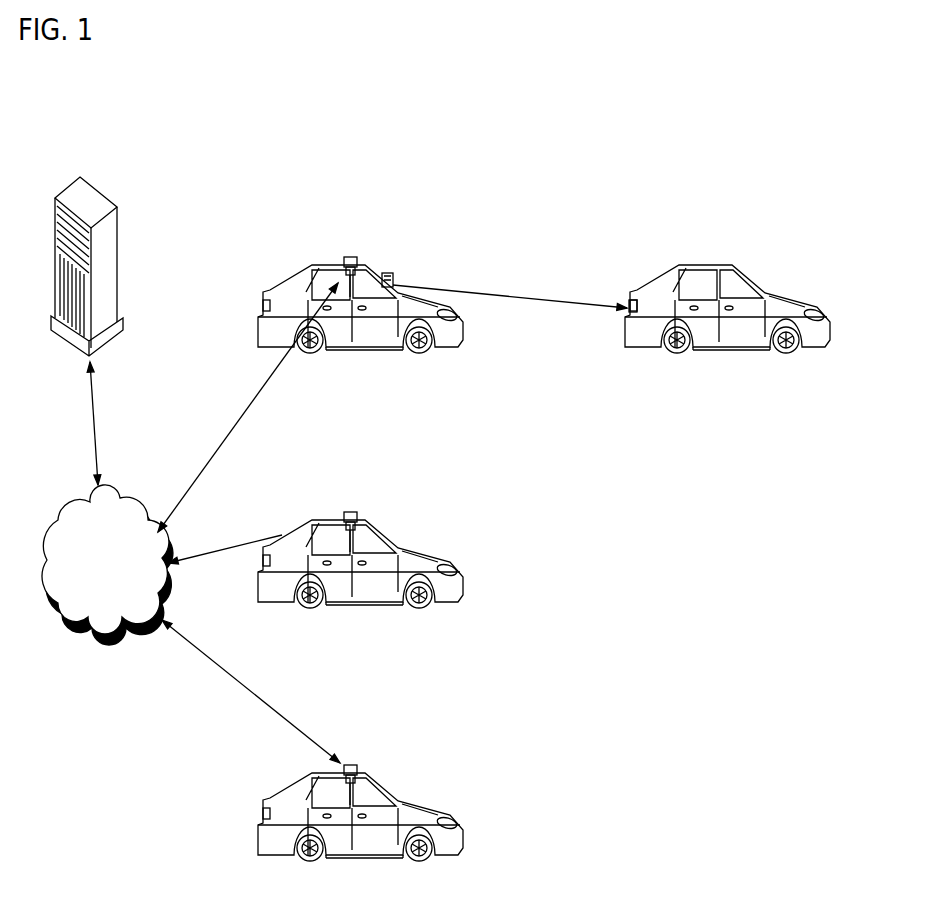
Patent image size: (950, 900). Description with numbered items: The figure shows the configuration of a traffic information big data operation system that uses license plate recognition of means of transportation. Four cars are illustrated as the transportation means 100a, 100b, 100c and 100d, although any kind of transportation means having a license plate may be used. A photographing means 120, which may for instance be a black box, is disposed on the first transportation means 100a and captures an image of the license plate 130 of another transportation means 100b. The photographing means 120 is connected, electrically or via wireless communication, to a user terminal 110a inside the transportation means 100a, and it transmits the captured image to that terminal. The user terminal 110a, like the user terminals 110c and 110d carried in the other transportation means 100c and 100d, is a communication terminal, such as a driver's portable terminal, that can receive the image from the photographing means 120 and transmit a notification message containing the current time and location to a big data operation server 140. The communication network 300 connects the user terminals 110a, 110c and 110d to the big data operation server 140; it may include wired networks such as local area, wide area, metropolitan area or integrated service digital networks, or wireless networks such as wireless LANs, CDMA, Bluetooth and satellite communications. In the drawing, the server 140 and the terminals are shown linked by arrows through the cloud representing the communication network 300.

The transportation means 100a is at (453, 300).
The another transportation means 100b is at (815, 313).
The transportation means 100c is at (450, 567).
The transportation means 100d is at (445, 823).
The user terminal 110a is at (351, 257).
The user terminal 110c is at (350, 512).
The user terminal 110d is at (350, 765).
The photographing means 120 is at (390, 273).
The license plate 130 is at (637, 290).
The big data operation server 140 is at (101, 190).
The communication network 300 is at (137, 495).